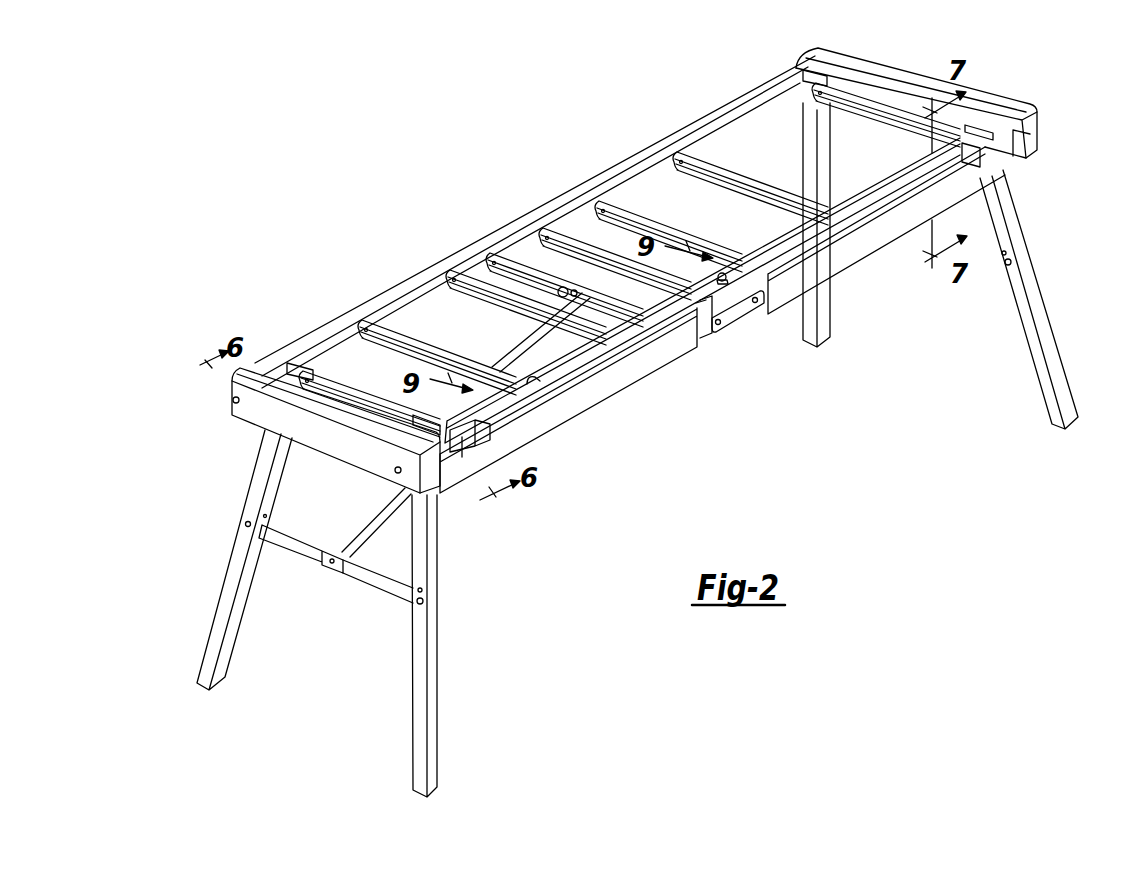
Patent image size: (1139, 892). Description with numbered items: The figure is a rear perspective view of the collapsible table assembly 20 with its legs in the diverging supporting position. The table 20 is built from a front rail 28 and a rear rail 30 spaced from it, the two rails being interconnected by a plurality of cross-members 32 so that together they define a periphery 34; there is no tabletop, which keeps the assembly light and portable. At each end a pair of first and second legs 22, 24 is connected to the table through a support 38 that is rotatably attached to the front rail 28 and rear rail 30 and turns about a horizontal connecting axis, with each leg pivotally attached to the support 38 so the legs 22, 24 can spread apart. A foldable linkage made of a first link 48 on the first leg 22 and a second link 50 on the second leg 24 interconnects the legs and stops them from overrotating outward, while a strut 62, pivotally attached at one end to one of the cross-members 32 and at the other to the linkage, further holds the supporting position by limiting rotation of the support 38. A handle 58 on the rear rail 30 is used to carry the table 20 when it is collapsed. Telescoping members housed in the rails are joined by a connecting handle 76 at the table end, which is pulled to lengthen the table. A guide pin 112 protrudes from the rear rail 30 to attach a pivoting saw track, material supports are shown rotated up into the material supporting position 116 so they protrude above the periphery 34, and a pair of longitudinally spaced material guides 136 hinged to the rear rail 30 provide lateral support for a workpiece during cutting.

The collapsible table assembly 20 is at (248, 220).
The first leg 22 is at (215, 628).
The second leg 24 is at (417, 715).
The front rail 28 is at (392, 300).
The rear rail 30 is at (530, 384).
The cross-members 32 is at (498, 245).
The periphery 34 is at (692, 110).
The support 38 is at (362, 395).
The first link 48 is at (290, 548).
The second link 50 is at (373, 580).
The handle 58 is at (742, 307).
The strut 62 is at (385, 515).
The connecting handle 76 is at (262, 418).
The guide pin 112 is at (722, 273).
The material supporting position 116 is at (675, 143).
The material guides 136 is at (648, 368).